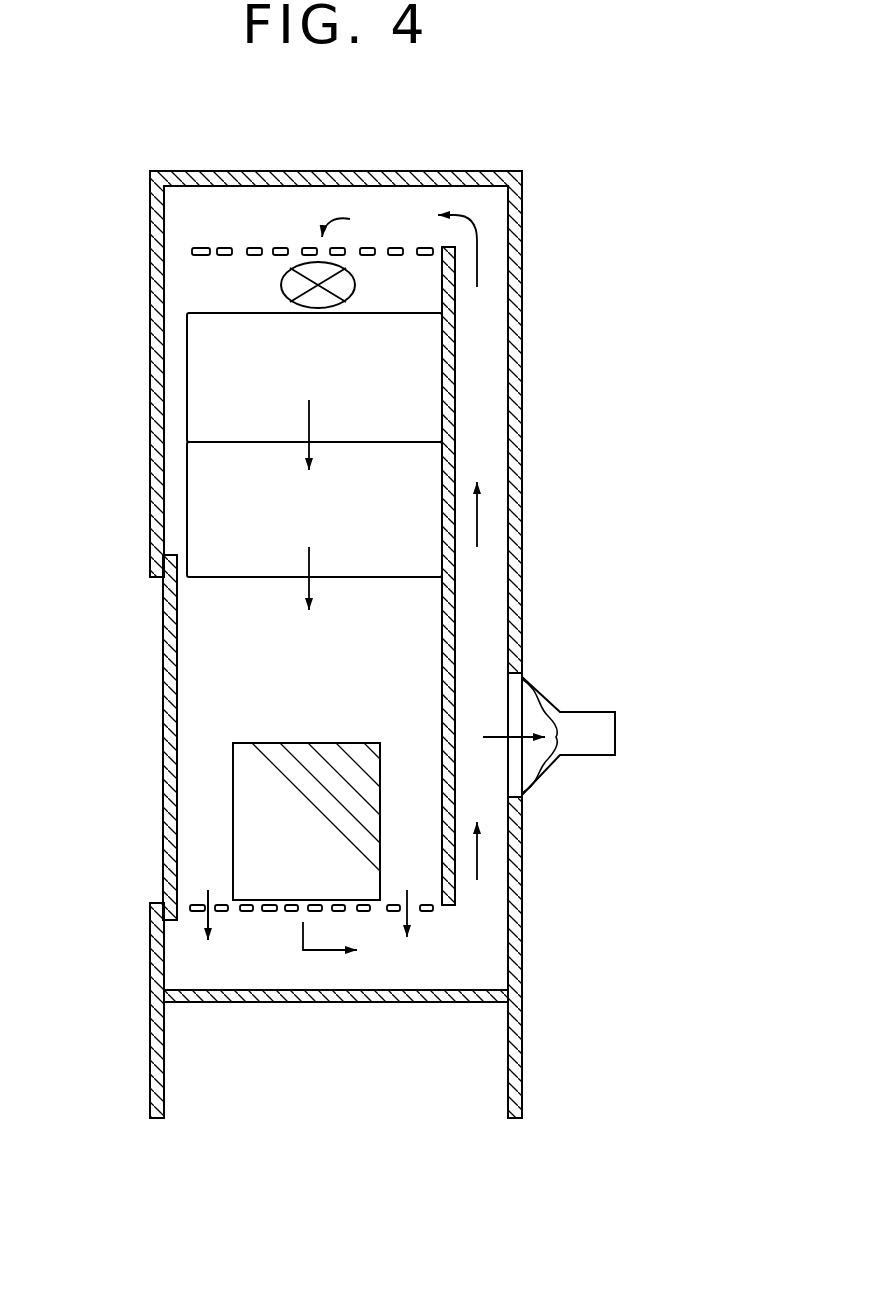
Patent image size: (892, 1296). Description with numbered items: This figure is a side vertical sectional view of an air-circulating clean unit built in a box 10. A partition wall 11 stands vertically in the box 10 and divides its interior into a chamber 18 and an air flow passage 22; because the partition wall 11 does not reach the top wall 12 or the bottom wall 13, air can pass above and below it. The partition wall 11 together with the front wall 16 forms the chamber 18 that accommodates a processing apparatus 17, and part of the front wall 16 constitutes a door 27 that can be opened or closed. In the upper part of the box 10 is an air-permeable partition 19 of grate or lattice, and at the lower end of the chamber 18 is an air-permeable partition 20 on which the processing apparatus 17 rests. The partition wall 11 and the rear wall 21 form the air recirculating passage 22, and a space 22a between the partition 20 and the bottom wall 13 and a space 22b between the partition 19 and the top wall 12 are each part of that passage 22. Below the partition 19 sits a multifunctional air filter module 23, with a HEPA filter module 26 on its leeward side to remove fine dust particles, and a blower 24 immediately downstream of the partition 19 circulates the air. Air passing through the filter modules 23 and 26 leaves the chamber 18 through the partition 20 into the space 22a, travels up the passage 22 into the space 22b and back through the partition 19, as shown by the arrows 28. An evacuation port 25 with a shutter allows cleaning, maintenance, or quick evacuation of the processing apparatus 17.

The box 10 is at (354, 609).
The partition wall 11 is at (455, 395).
The top wall 12 is at (403, 170).
The bottom wall 13 is at (295, 1002).
The front wall 16 is at (152, 537).
The processing apparatus 17 is at (233, 803).
The chamber 18 is at (218, 692).
The partition 19 is at (213, 250).
The partition 20 is at (222, 900).
The rear wall 21 is at (522, 492).
The air recirculating passage 22 is at (480, 327).
The space 22a is at (227, 955).
The space 22b is at (232, 203).
The multifunctional air filter module 23 is at (243, 385).
The blower 24 is at (290, 277).
The evacuation port 25 is at (593, 735).
The HEPA filter module 26 is at (238, 473).
The door 27 is at (163, 625).
The arrows 28 is at (477, 528).